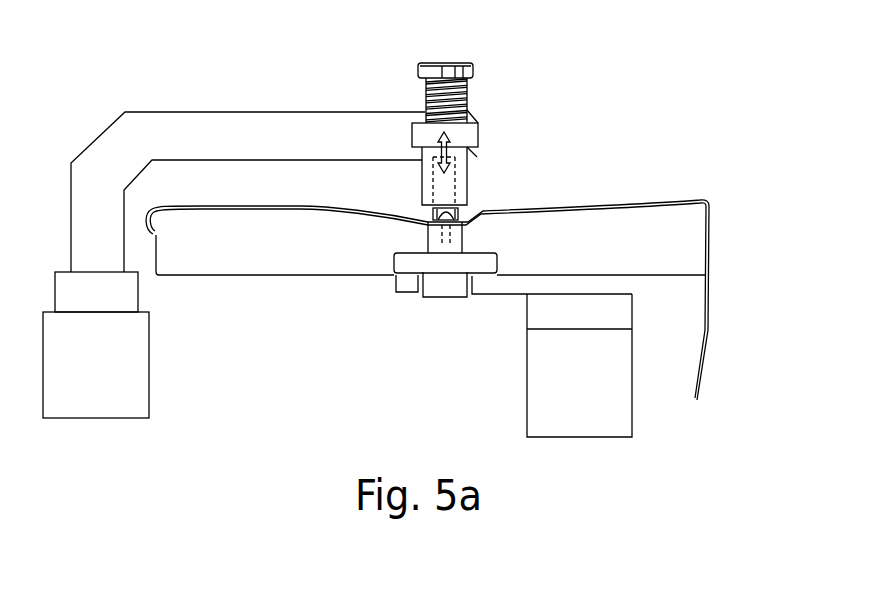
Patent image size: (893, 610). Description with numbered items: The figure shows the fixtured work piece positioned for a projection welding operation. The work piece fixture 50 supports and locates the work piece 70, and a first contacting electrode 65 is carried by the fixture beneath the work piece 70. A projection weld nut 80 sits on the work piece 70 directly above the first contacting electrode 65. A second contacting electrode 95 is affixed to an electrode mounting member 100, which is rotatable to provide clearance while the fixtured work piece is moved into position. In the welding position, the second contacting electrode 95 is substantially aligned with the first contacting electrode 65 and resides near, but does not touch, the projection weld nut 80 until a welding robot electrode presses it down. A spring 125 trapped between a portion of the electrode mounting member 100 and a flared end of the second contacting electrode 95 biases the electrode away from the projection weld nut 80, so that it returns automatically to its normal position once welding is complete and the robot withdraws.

The work piece fixture 50 is at (737, 194).
The first contacting electrode 65 is at (430, 297).
The work piece 70 is at (538, 212).
The projection weld nut 80 is at (433, 217).
The second contacting electrode 95 is at (462, 173).
The electrode mounting member 100 is at (83, 147).
The spring 125 is at (425, 90).